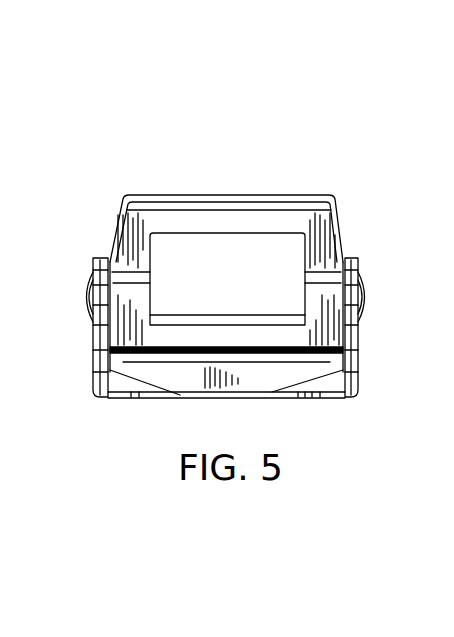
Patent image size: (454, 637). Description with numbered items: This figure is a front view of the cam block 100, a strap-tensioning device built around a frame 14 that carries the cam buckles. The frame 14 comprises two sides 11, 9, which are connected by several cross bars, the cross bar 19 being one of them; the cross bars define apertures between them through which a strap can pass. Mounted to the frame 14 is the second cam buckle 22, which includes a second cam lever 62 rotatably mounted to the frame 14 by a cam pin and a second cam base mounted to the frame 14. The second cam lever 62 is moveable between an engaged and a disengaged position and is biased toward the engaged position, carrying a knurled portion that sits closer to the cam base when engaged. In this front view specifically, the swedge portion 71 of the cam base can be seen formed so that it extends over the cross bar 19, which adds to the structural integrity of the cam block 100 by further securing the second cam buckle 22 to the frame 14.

The cam block 100 is at (287, 92).
The second cam buckle 22 is at (358, 224).
The second cam lever 62 is at (284, 212).
The side 11 is at (95, 260).
The frame 14 is at (96, 333).
The side 9 is at (362, 355).
The swedge portion 71 is at (265, 378).
The cross bar 19 is at (332, 393).